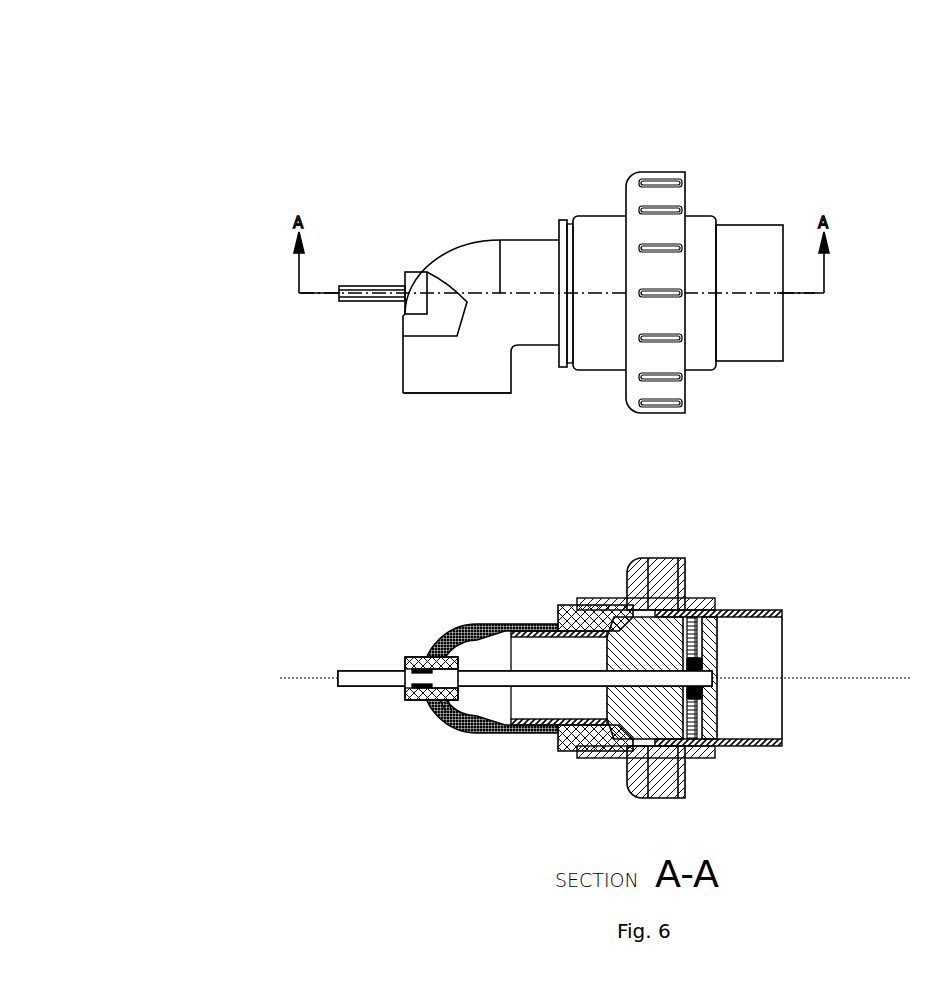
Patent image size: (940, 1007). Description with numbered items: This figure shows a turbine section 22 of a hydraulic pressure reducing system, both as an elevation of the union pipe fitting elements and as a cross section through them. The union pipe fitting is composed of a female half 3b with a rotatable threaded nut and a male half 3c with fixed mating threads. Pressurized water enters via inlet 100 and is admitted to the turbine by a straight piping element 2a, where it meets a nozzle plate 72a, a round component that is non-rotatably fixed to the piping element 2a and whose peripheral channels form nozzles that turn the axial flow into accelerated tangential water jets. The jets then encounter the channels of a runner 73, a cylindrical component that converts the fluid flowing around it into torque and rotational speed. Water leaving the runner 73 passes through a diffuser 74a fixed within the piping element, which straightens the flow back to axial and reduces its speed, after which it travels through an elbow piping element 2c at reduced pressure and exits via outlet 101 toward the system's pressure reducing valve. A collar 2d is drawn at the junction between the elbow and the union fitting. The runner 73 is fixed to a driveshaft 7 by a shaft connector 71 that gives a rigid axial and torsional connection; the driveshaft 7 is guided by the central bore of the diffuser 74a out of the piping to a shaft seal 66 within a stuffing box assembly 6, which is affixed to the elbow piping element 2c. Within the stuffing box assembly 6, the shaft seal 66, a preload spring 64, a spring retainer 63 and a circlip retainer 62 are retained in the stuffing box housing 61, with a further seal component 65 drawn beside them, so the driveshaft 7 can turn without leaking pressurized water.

The driveshaft 7 is at (368, 286).
The stuffing box assembly 6 is at (418, 272).
The elbow piping element 2c is at (485, 240).
The collar flange 2d is at (563, 218).
The straight piping element 2a is at (547, 212).
The female half of union pipe fitting 3b is at (650, 172).
The male half of union pipe fitting 3c is at (690, 600).
The inlet 100 is at (792, 293).
The outlet 101 is at (457, 409).
The turbine section 22 is at (300, 399).
The circlip retainer 62 is at (408, 696).
The stuffing box housing 61 is at (417, 696).
The spring retainer 63 is at (424, 696).
The preload spring 64 is at (431, 696).
The seal element 65 is at (445, 715).
The shaft seal 66 is at (432, 700).
The shaft connector 71 is at (697, 673).
The nozzle plate 72a is at (712, 704).
The runner 73 is at (714, 750).
The diffuser 74a is at (688, 742).